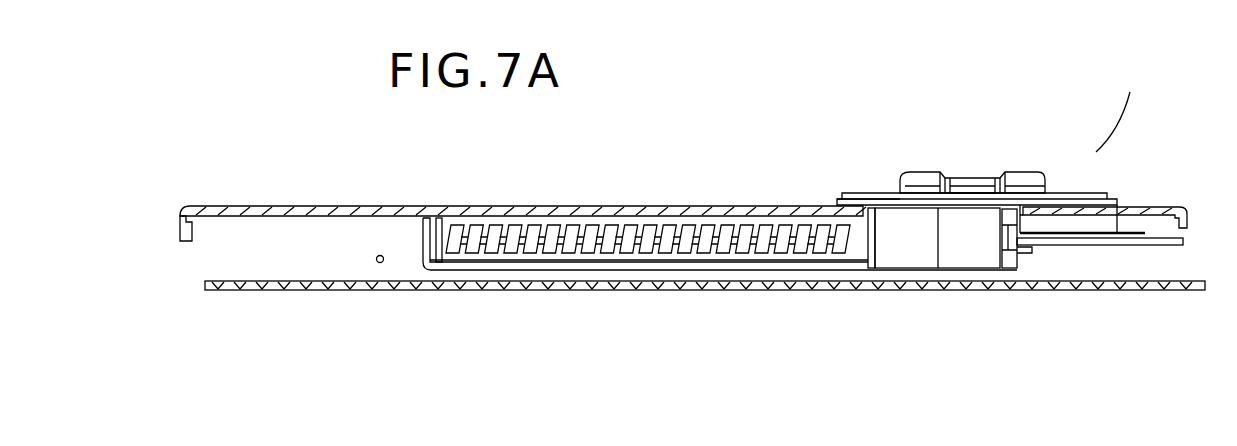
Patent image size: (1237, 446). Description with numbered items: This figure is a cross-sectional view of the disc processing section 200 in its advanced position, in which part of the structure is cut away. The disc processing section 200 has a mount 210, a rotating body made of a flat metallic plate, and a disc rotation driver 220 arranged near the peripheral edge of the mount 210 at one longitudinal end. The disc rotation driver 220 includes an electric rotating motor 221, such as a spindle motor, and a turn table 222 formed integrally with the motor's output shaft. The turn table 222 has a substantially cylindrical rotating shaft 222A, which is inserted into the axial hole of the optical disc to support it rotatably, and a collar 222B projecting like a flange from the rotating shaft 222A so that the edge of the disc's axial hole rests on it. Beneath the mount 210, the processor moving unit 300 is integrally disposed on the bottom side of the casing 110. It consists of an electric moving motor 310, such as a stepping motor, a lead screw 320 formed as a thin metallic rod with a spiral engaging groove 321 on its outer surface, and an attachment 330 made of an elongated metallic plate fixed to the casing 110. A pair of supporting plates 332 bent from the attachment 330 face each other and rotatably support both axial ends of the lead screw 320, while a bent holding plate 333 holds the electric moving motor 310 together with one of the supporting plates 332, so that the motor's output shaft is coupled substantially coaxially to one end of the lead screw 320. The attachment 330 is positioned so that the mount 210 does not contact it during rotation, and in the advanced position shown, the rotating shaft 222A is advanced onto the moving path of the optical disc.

The disc processing section 200 is at (1092, 157).
The mount 210 is at (1162, 205).
The disc rotation driver 220 is at (884, 176).
The turn table 222 is at (921, 146).
The rotating shaft 222A is at (975, 175).
The collar 222B is at (848, 193).
The electric rotating motor 221 is at (1085, 240).
The casing 110 is at (1196, 290).
The processor moving unit 300 is at (428, 270).
The electric moving motor 310 is at (905, 262).
The lead screw 320 is at (648, 287).
The engaging groove 321 is at (720, 250).
The attachment 330 is at (803, 268).
The supporting plates 332 is at (436, 222).
The holding plate 333 is at (1018, 263).